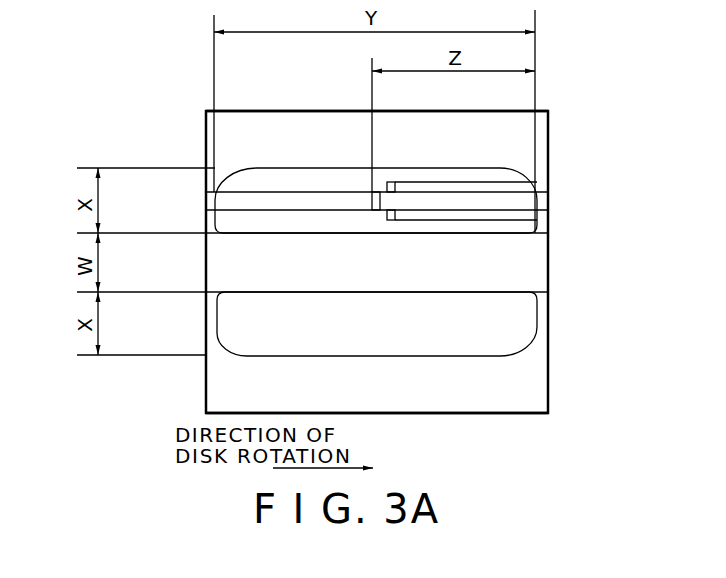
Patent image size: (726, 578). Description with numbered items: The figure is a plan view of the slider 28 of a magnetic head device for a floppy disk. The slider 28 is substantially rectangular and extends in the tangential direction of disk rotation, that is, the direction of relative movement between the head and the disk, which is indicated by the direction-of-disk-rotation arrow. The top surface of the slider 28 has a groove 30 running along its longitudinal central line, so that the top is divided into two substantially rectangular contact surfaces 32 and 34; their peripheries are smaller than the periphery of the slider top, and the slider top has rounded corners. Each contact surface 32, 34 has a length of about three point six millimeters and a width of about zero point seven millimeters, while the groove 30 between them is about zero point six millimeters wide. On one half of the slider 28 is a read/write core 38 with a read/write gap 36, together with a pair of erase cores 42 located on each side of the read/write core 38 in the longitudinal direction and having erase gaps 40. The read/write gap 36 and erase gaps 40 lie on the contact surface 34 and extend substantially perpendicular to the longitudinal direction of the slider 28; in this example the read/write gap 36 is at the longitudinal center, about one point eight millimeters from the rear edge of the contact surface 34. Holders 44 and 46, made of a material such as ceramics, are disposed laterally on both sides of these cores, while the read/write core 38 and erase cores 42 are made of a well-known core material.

The slider 28 is at (560, 379).
The groove 30 is at (539, 263).
The contact surface 32 is at (527, 312).
The contact surface 34 is at (495, 172).
The read/write gap 36 is at (369, 200).
The read/write core 38 is at (287, 205).
The erase gap 40 is at (393, 188).
The erase core 42 is at (542, 183).
The holder 44 is at (487, 404).
The holder 46 is at (277, 127).